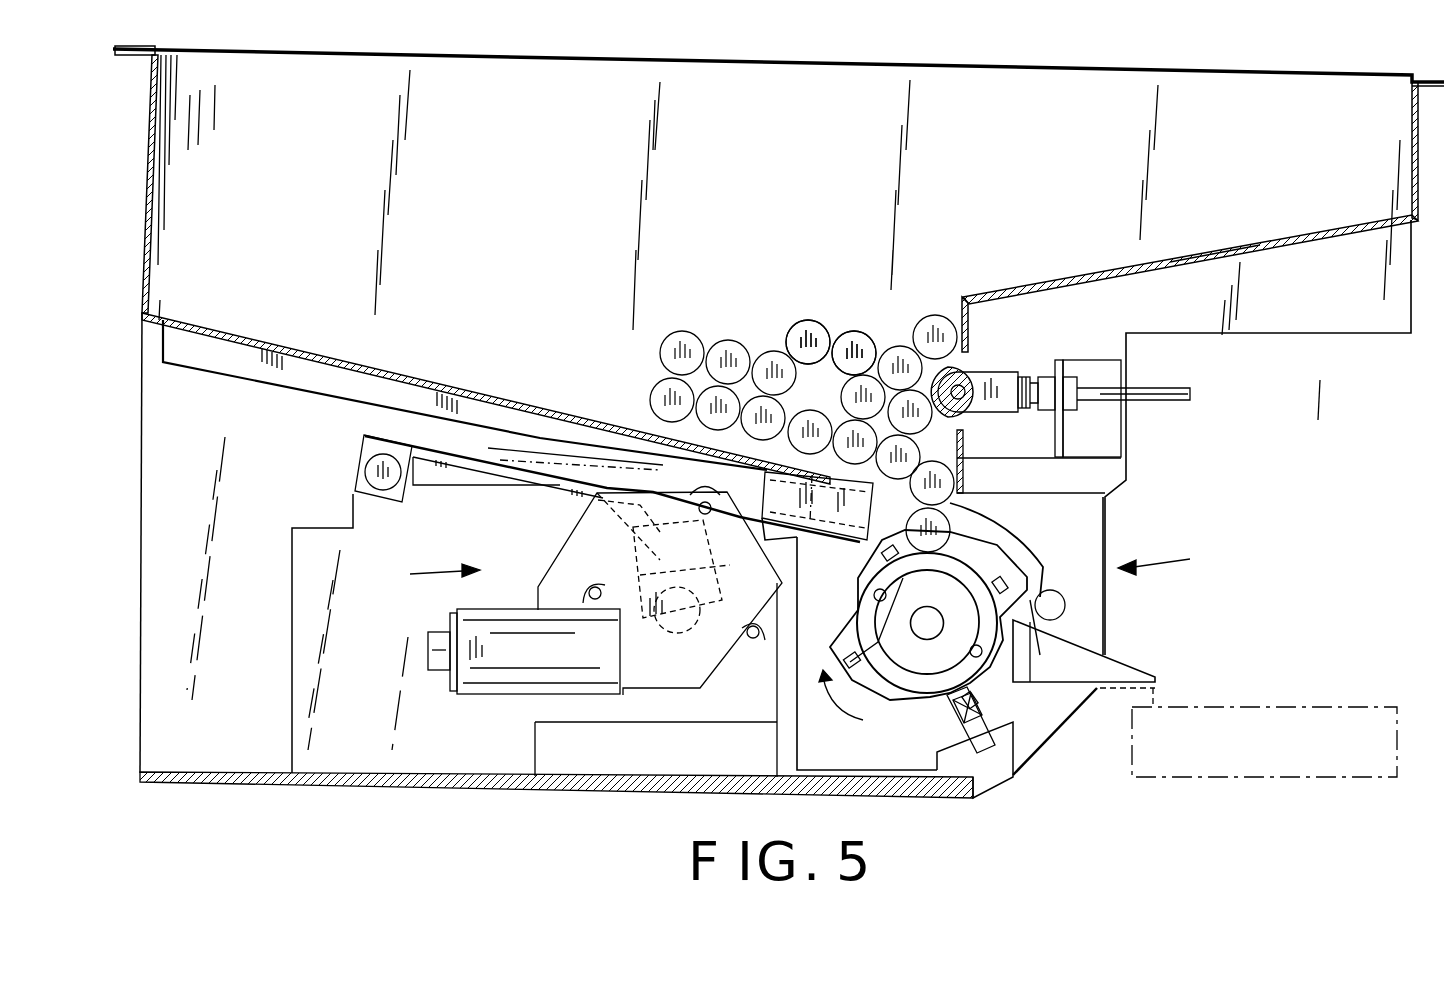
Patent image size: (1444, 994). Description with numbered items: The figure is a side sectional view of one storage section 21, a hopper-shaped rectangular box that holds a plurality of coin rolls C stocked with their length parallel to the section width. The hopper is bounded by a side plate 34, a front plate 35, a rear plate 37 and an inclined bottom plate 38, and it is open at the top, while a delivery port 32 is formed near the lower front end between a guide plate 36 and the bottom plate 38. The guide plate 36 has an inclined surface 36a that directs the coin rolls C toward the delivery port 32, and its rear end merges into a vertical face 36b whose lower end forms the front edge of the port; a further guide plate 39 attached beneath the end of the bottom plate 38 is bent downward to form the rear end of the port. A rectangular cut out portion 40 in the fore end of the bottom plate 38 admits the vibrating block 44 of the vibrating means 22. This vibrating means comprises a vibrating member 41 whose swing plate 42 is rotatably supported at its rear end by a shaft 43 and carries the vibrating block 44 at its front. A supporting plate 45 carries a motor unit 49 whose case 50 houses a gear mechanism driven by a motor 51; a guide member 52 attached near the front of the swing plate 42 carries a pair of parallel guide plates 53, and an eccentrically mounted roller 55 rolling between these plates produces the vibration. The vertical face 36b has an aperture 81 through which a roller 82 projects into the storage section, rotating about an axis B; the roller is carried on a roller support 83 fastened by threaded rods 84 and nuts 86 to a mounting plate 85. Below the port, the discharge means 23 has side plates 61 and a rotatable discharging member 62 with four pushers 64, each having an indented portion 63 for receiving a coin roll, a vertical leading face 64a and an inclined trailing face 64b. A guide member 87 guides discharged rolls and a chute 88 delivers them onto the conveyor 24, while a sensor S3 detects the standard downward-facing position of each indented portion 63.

The storage section 21 is at (862, 39).
The vibrating means 22 is at (372, 585).
The discharge means 23 is at (1199, 570).
The conveyor 24 is at (1358, 707).
The delivery port 32 is at (986, 494).
The side plate 34 is at (656, 96).
The front plate 35 is at (1410, 100).
The guide plate 36 is at (1278, 233).
The inclined surface 36a is at (1216, 241).
The vertical face 36b is at (961, 302).
The rear plate 37 is at (157, 86).
The bottom plate 38 is at (316, 346).
The guide plate 39 is at (964, 452).
The cut out portion 40 is at (724, 356).
The vibrating member 41 is at (470, 470).
The swing plate 42 is at (520, 486).
The shaft 43 is at (366, 467).
The vibrating block 44 is at (792, 522).
The supporting plate 45 is at (546, 718).
The motor unit 49 is at (606, 704).
The case 50 is at (692, 702).
The motor 51 is at (474, 690).
The guide member 52 is at (598, 502).
The guide plates 53 is at (622, 545).
The roller 55 is at (718, 660).
The side plates 61 is at (1045, 725).
The discharging member 62 is at (908, 692).
The indented portions 63 is at (953, 557).
The pushers 64 is at (1040, 568).
The vertical leading face 64a is at (1085, 630).
The inclined trailing face 64b is at (1025, 546).
The aperture 81 is at (963, 358).
The roller 82 is at (1000, 380).
The roller support 83 is at (1017, 373).
The threaded rods 84 is at (1190, 394).
The mounting plate 85 is at (1105, 425).
The nuts 86 is at (1077, 372).
The guide member 87 is at (1106, 520).
The chute 88 is at (1140, 660).
The axis B is at (904, 362).
The coin rolls C is at (852, 330).
The sensor S3 is at (1013, 777).